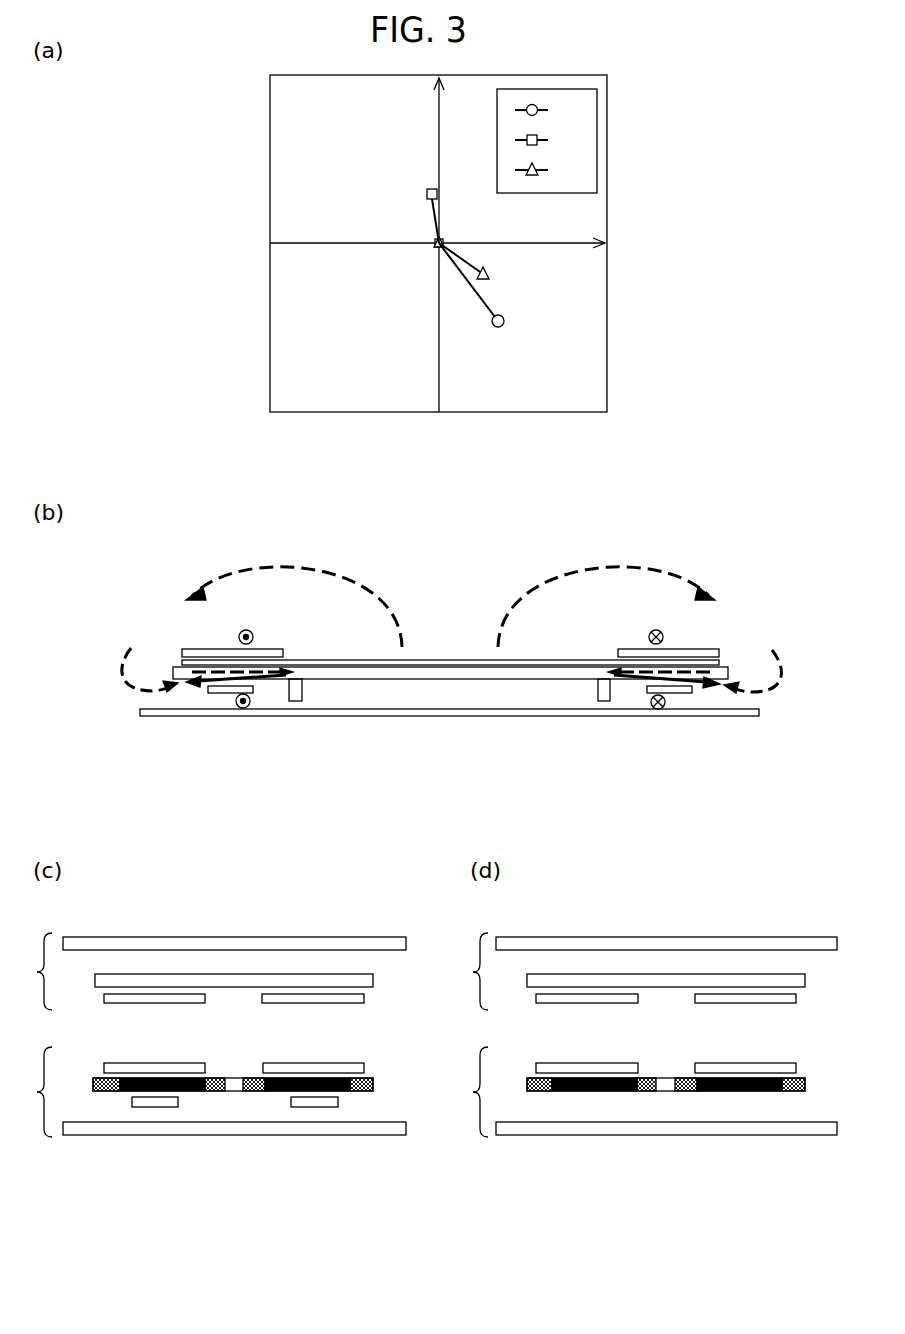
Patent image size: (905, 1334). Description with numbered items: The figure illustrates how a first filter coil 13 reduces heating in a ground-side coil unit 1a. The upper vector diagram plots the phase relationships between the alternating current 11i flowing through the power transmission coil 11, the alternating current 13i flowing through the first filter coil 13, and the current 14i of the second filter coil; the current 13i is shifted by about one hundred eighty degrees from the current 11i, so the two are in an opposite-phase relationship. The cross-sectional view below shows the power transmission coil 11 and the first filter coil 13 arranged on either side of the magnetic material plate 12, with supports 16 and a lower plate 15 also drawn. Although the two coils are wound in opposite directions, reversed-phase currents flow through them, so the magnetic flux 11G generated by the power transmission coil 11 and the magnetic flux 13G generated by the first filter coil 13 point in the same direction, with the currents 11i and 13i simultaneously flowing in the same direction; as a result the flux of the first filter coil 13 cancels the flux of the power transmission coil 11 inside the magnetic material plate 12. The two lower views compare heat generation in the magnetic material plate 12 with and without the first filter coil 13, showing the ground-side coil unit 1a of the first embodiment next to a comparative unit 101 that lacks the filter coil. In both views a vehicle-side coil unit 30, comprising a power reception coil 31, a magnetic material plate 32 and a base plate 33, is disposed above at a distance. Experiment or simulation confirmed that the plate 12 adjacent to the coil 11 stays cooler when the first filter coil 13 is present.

The alternating current flowing through the power transmission coil 11i is at (250, 630).
The alternating current flowing through the first filter coil 13i is at (250, 748).
The current flowing through the second filter coil 14i is at (514, 219).
The power transmission coil 11 is at (265, 649).
The magnetic flux generated by the power transmission coil 11G is at (353, 585).
The magnetic material plate 12 is at (173, 668).
The first filter coil 13 is at (218, 694).
The magnetic flux generated by the first filter coil 13G is at (270, 680).
The base plate 15 is at (127, 1134).
The support 16 is at (303, 694).
The vehicle-side coil unit 30 is at (248, 971).
The power reception coil 31 is at (318, 1000).
The magnetic material plate 32 is at (230, 984).
The base plate 33 is at (338, 937).
The ground-side coil unit 1a is at (30, 1092).
The lower unit 101 is at (459, 1092).